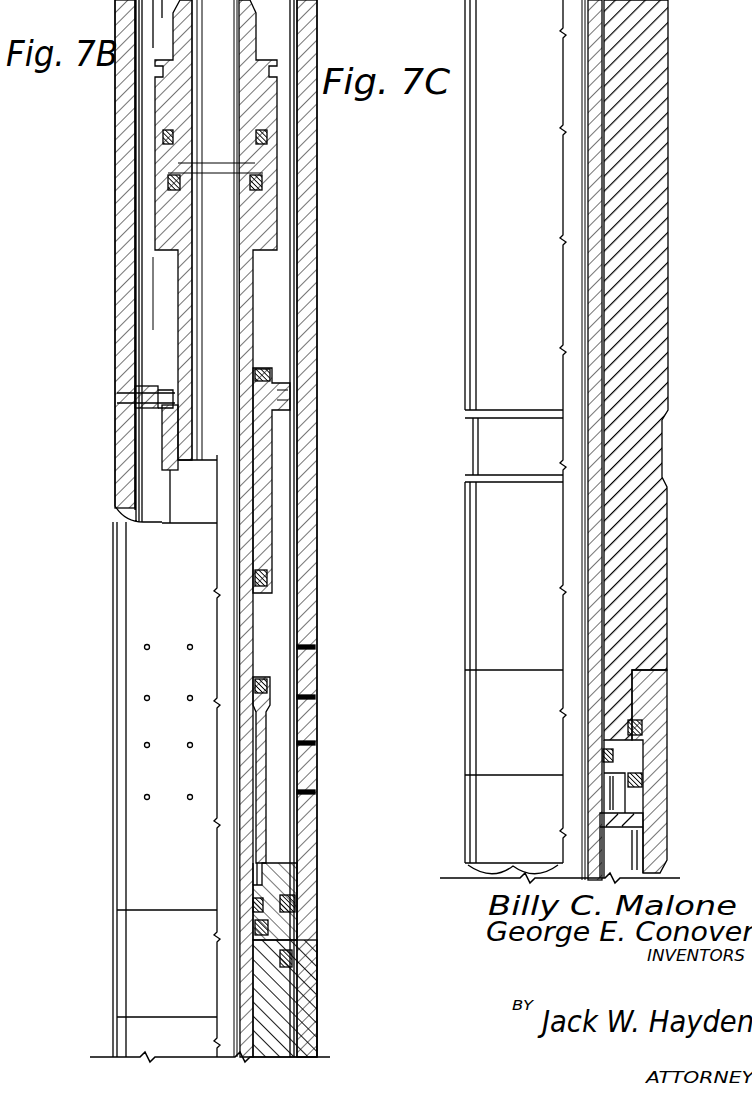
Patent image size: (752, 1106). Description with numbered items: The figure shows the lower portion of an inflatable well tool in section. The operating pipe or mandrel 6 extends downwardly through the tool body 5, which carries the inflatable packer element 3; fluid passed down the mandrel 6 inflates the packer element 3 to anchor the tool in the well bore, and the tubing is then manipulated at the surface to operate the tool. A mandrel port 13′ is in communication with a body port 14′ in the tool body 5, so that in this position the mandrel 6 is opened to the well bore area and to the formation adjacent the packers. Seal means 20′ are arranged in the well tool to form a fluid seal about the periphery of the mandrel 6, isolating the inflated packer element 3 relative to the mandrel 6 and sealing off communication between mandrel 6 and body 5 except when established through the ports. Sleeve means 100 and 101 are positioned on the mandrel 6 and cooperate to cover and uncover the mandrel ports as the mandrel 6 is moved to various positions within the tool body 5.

In FIG. 7B, the inflatable packer element 3 is at (303, 1047).
In FIG. 7C, the inflatable packer element 3 is at (662, 392).
In FIG. 7B, the tool body 5 is at (317, 390).
In FIG. 7B, the operating pipe or mandrel 6 is at (250, 623).
In FIG. 7C, the operating pipe or mandrel 6 is at (597, 583).
In FIG. 7B, the mandrel port 13′ is at (293, 958).
In FIG. 7B, the body port 14′ is at (313, 745).
In FIG. 7B, the seal means 20′ is at (268, 921).
In FIG. 7C, the seal means 20′ is at (612, 757).
In FIG. 7B, the sleeve means 100 is at (258, 807).
In FIG. 7B, the sleeve means 101 is at (267, 485).